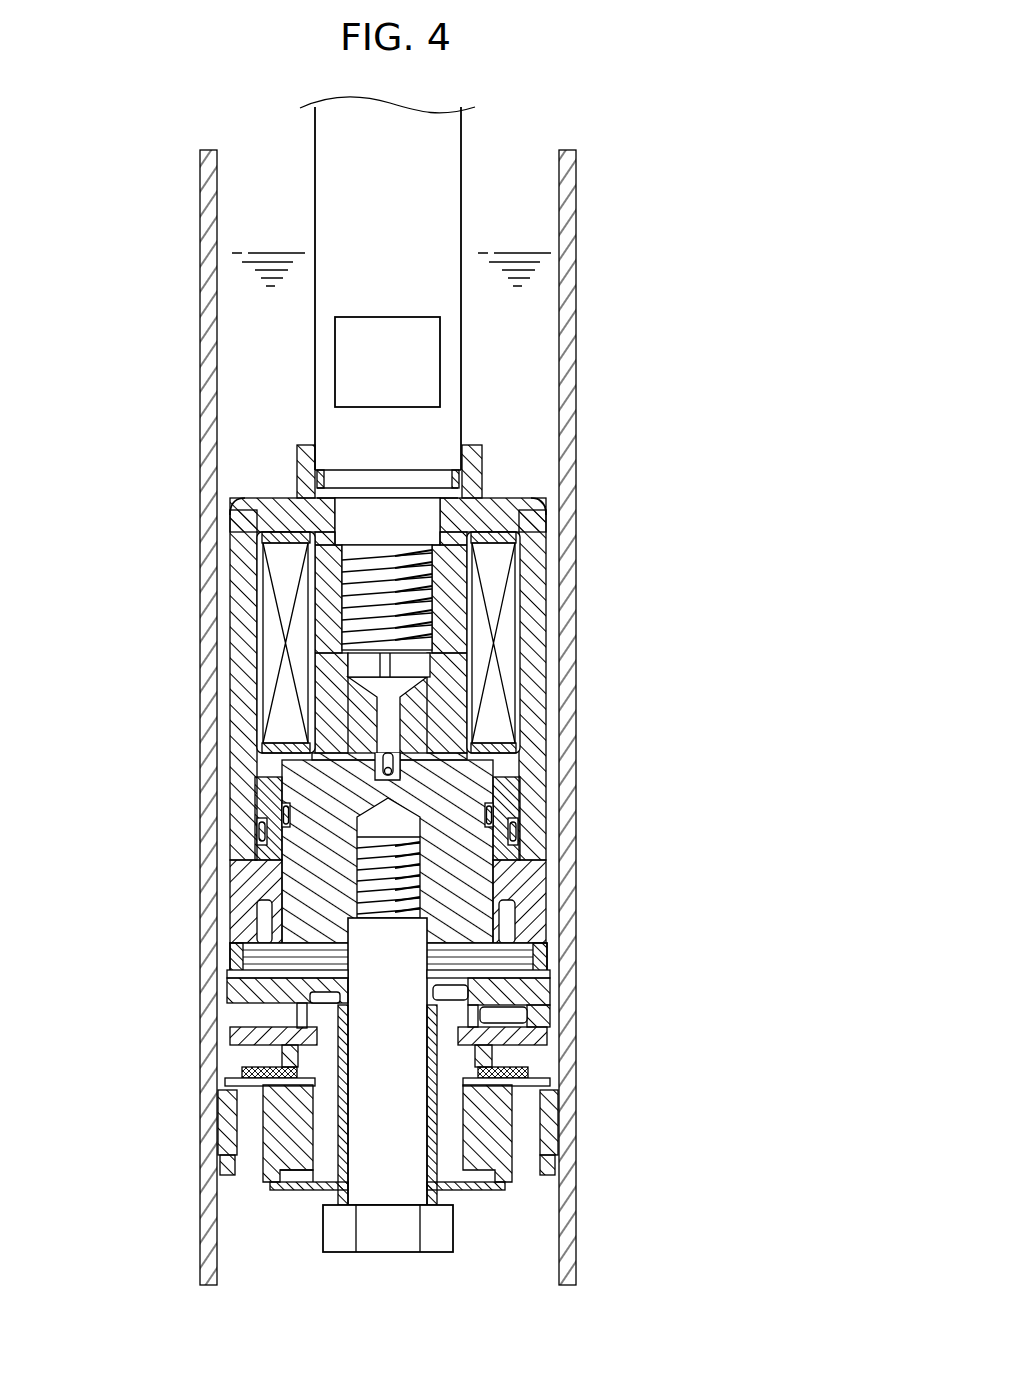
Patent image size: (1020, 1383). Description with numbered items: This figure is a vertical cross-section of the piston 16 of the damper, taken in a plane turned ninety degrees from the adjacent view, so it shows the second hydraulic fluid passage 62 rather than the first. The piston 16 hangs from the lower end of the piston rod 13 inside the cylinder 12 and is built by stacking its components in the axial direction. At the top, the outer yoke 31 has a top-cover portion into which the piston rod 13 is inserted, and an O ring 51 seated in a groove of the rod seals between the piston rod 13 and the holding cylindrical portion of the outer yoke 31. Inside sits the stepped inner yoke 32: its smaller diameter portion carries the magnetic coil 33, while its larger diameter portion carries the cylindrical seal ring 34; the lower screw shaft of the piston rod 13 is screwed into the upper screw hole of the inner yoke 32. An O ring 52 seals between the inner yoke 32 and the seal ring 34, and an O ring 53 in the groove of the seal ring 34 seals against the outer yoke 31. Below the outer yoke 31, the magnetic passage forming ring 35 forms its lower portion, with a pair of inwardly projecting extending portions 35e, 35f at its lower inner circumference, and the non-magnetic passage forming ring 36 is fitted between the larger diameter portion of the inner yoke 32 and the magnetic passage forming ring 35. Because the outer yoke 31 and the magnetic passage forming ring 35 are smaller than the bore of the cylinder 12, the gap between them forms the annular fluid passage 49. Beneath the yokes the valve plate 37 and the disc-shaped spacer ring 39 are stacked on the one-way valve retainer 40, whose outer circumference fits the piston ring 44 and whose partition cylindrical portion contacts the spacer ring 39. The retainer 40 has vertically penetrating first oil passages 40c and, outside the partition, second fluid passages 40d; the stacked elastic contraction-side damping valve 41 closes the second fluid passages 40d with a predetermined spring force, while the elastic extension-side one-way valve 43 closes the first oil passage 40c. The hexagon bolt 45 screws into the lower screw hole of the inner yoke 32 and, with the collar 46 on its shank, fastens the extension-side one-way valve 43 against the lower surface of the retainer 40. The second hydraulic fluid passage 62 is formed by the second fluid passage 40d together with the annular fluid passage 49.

The cylinder 12 is at (207, 228).
The piston rod 13 is at (465, 228).
The piston 16 is at (248, 490).
The outer yoke 31 is at (226, 530).
The inner yoke 32 is at (308, 578).
The magnetic coil 33 is at (256, 668).
The seal ring 34 is at (524, 782).
The magnetic passage forming ring 35 is at (549, 932).
The extending portion 35e is at (262, 932).
The extending portion 35f is at (508, 930).
The non-magnetic passage forming ring 36 is at (240, 892).
The valve plate 37 is at (513, 972).
The spacer ring 39 is at (538, 1040).
The one-way valve retainer 40 is at (217, 1162).
The first oil passage 40c is at (318, 1172).
The second fluid passage 40d is at (235, 1158).
The contraction-side damping valve 41 is at (233, 1070).
The extension-side one-way valve 43 is at (283, 1190).
The piston ring 44 is at (217, 1108).
The hexagon bolt 45 is at (448, 1234).
The collar 46 is at (440, 1190).
The annular fluid passage 49 is at (551, 703).
The O ring 51 is at (318, 480).
The O ring 52 is at (285, 815).
The O ring 53 is at (516, 830).
The second hydraulic fluid passage 62 is at (730, 712).